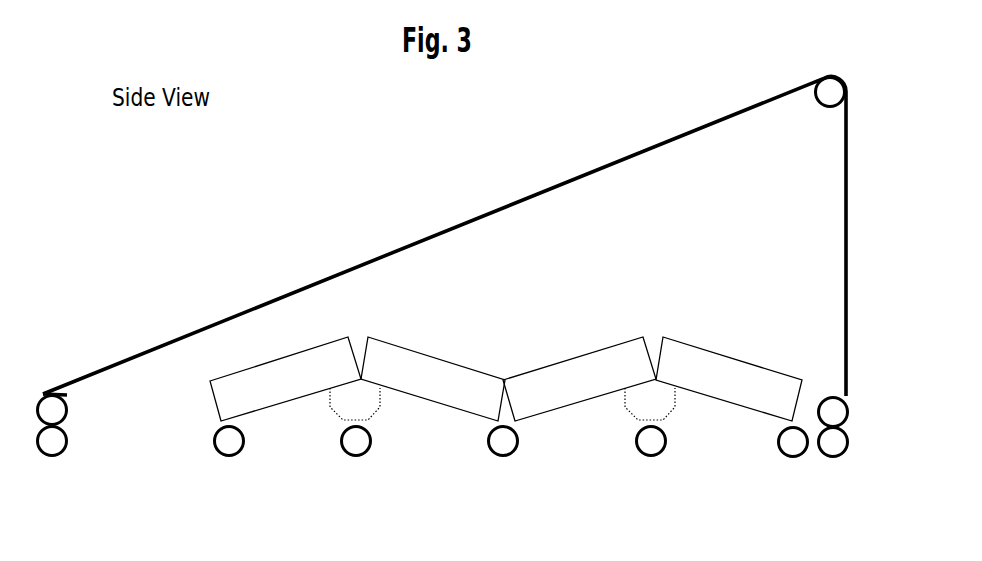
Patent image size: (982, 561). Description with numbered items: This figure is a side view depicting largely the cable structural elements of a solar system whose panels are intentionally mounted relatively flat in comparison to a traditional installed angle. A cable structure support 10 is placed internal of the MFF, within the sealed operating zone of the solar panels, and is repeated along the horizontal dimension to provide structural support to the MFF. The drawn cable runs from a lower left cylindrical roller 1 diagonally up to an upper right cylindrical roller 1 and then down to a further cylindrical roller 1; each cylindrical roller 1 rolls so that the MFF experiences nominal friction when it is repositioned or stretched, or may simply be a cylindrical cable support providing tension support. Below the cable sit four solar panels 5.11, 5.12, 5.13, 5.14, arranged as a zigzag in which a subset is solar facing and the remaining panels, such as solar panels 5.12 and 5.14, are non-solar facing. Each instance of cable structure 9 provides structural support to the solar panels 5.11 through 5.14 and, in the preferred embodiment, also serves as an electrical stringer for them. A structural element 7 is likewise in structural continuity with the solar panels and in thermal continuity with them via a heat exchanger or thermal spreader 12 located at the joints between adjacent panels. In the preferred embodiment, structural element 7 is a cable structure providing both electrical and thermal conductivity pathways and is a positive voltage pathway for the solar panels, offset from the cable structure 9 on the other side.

The cylindrical roller 1 is at (443, 252).
The structural element 7 is at (443, 442).
The cable structure 9 is at (511, 442).
The cable structure support 10 is at (444, 236).
The heat exchanger or thermal spreader 12 is at (502, 404).
The solar panel 5.11 is at (285, 379).
The solar panel 5.12 is at (433, 379).
The solar panel 5.13 is at (579, 379).
The solar panel 5.14 is at (729, 379).